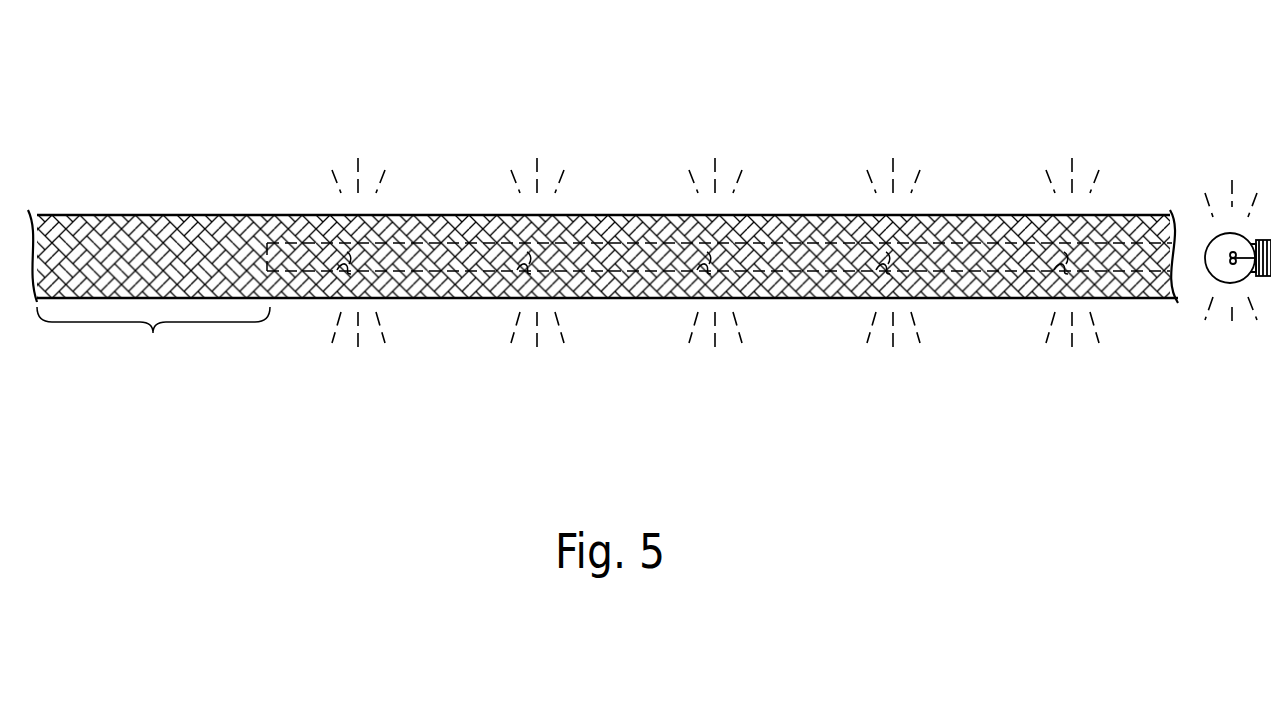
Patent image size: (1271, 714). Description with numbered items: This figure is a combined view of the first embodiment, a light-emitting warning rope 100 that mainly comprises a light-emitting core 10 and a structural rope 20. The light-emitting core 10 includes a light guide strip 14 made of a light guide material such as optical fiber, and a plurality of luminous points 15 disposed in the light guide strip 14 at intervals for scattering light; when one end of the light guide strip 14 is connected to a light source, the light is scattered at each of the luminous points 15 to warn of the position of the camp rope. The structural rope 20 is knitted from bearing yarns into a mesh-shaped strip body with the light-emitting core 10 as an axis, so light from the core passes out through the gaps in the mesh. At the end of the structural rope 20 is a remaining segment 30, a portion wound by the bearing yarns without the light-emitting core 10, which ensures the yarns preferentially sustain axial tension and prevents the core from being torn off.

The light-emitting warning rope 100 is at (649, 219).
The structural rope 20 is at (283, 215).
The light-emitting core 10 is at (826, 243).
The light guide strip 14 is at (1145, 236).
The luminous points 15 is at (684, 280).
The remaining segment 30 is at (153, 340).